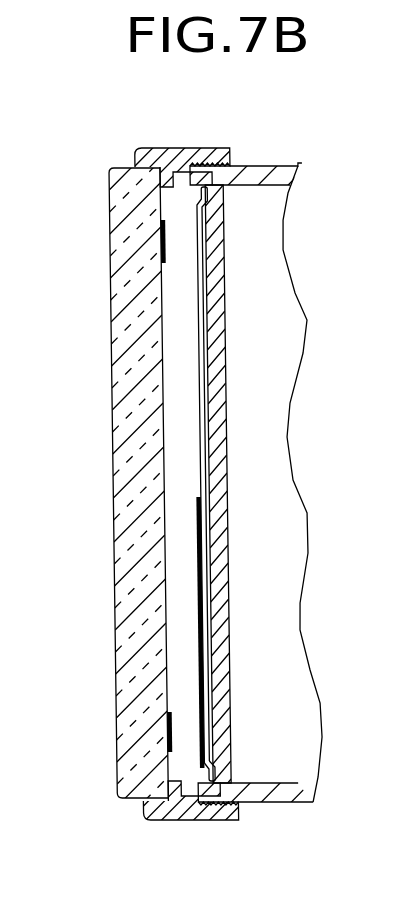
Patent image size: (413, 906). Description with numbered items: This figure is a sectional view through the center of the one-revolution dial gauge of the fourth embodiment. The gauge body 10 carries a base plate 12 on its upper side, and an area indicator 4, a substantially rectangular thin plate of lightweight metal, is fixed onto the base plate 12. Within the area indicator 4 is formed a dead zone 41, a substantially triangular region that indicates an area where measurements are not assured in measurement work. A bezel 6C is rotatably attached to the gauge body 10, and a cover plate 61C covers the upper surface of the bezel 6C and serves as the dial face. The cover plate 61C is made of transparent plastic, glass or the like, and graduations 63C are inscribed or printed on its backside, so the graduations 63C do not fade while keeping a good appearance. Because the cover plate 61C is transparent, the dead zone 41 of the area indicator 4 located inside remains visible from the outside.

The cover plate 61C is at (109, 177).
The graduations 63C is at (167, 242).
The bezel 6C is at (196, 148).
The gauge body 10 is at (296, 164).
The base plate 12 is at (218, 328).
The area indicator 4 is at (203, 413).
The dead zone 41 is at (200, 522).